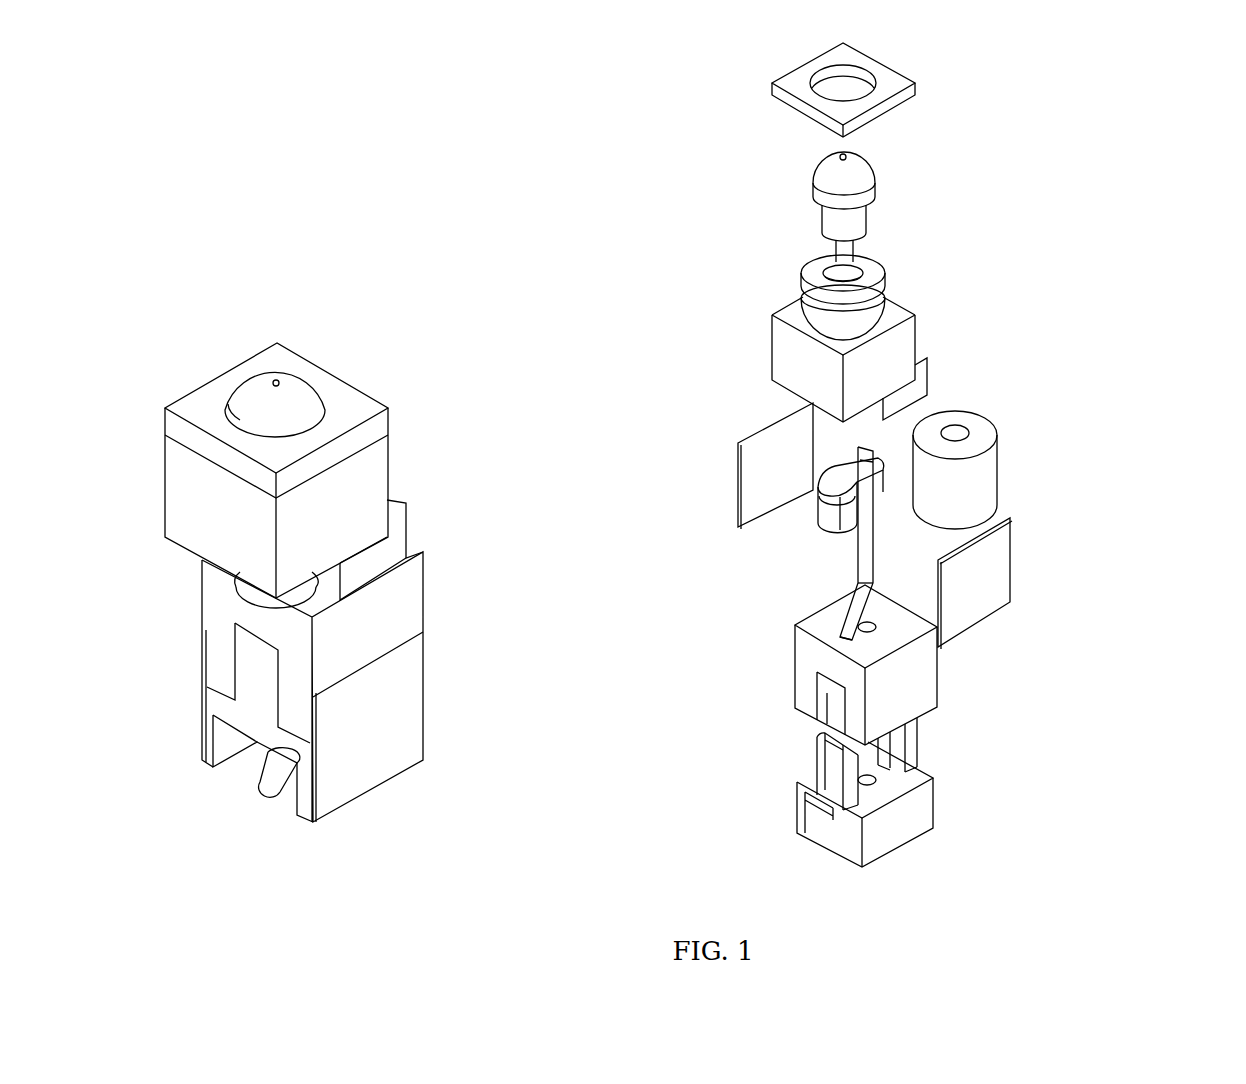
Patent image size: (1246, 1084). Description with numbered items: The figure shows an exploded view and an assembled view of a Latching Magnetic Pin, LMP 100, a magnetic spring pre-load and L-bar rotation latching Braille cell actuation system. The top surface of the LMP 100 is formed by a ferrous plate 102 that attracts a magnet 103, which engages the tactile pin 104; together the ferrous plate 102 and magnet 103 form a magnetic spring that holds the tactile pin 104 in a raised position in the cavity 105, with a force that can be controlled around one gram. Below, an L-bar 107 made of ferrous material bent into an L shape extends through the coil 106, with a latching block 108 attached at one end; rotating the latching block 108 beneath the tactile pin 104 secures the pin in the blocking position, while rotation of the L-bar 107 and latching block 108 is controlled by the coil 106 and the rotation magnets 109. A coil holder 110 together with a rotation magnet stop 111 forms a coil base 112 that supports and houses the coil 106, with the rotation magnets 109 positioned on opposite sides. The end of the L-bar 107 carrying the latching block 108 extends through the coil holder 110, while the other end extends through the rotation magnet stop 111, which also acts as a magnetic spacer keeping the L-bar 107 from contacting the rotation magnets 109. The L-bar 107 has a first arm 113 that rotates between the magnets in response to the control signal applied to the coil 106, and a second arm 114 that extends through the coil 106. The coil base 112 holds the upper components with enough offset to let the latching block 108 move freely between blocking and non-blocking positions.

The LMP 100 is at (294, 618).
The ferrous plate 102 is at (765, 95).
The magnet 103 is at (808, 277).
The tactile pin 104 is at (882, 202).
The cavity 105 is at (923, 342).
The coil 106 is at (1003, 463).
The L-bar 107 is at (951, 555).
The latching block 108 is at (817, 522).
The rotation magnets 109 is at (772, 437).
The coil holder 110 is at (790, 677).
The rotation magnet stop 111 is at (790, 812).
The coil base 112 is at (953, 799).
The first arm 113 is at (832, 628).
The second arm 114 is at (877, 541).